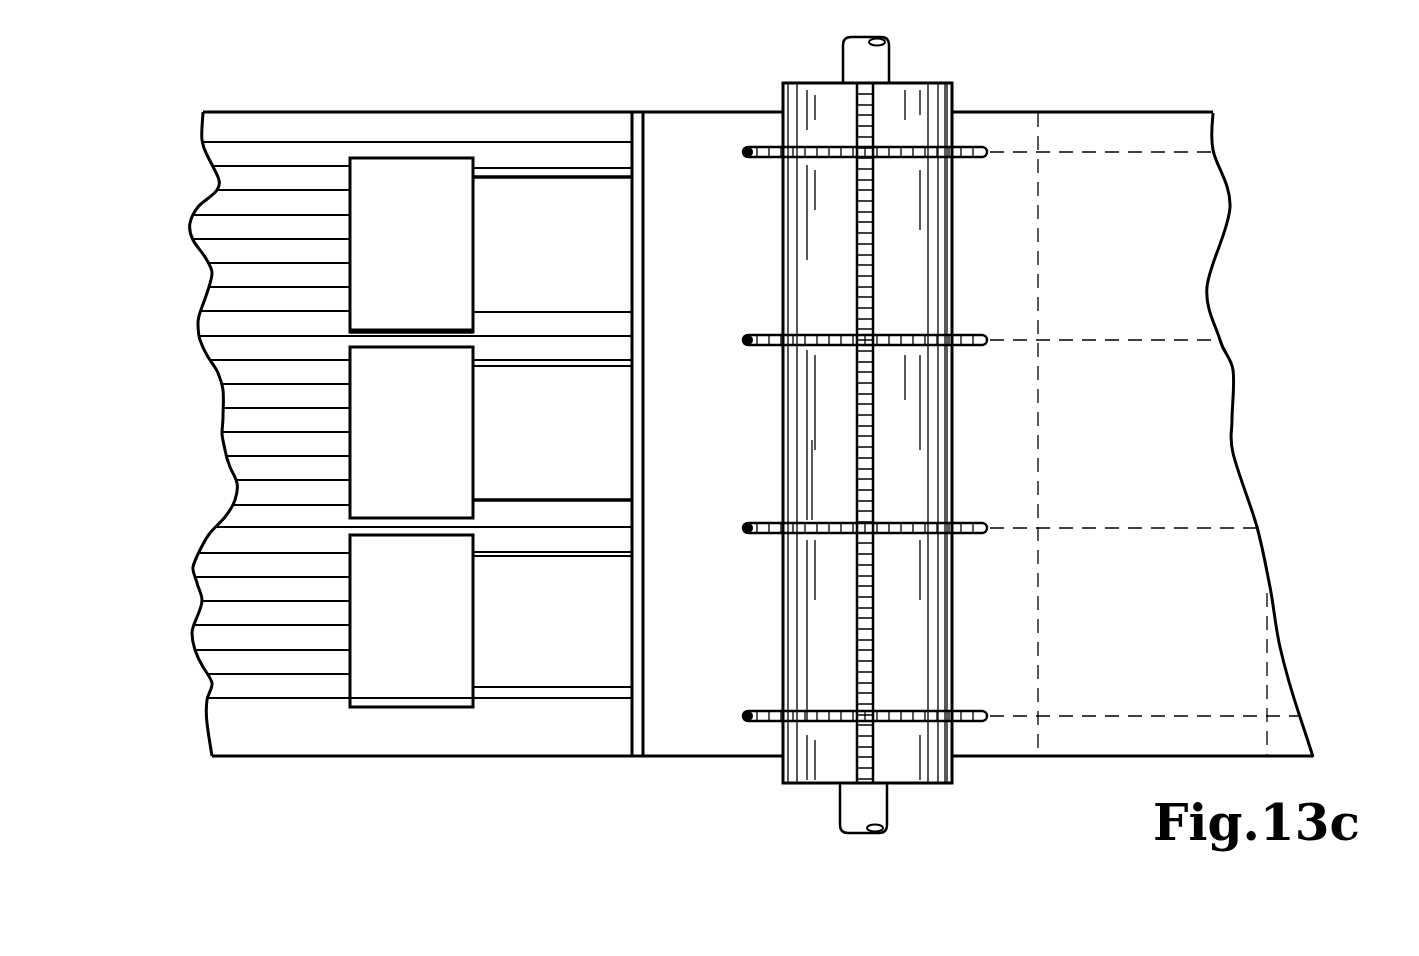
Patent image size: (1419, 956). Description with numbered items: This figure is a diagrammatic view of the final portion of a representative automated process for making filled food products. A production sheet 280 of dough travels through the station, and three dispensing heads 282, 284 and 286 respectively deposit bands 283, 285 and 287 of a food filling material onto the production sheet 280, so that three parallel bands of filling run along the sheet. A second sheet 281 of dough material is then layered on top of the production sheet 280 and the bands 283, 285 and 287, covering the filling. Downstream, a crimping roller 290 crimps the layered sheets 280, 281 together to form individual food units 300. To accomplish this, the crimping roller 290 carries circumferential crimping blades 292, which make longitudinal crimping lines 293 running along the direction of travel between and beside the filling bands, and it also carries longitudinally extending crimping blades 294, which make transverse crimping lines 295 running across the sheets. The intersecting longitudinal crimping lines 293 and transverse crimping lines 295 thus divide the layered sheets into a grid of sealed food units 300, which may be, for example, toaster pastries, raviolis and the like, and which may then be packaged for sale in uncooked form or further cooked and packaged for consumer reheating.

The production sheet 280 is at (295, 722).
The second sheet 281 is at (640, 163).
The dispensing head 282 is at (433, 253).
The band 283 is at (561, 262).
The dispensing head 284 is at (429, 445).
The band 285 is at (561, 453).
The dispensing head 286 is at (429, 645).
The band 287 is at (561, 637).
The crimping roller 290 is at (928, 297).
The circumferential crimping blades 292 is at (773, 158).
The longitudinal crimping lines 293 is at (1168, 153).
The longitudinally extending crimping blades 294 is at (875, 215).
The transverse crimping lines 295 is at (1042, 176).
The food units 300 is at (1143, 273).